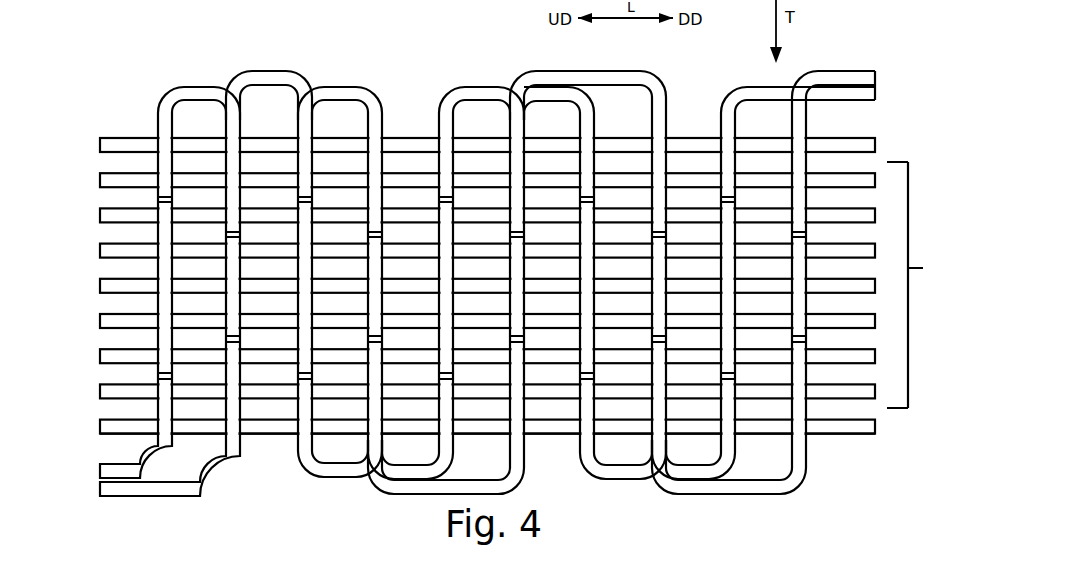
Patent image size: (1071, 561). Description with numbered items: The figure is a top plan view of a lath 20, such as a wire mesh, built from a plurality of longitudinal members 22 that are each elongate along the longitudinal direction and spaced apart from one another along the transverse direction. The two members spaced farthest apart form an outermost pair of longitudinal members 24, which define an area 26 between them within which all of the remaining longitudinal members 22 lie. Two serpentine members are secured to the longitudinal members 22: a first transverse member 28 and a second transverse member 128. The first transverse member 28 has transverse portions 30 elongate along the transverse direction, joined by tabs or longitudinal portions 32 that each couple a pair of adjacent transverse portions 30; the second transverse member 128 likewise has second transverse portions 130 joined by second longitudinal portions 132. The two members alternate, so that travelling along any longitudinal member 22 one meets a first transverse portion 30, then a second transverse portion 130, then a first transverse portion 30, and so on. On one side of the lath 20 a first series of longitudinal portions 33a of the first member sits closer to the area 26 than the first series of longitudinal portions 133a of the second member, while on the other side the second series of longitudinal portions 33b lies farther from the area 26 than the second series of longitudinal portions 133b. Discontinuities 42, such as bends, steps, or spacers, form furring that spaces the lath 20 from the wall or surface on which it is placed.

The lath 20 is at (393, 83).
The longitudinal members 22 is at (100, 145).
The outermost pair of longitudinal members 24 is at (863, 138).
The area 26 is at (918, 285).
The first transverse member 28 is at (100, 463).
The second transverse member 128 is at (100, 488).
The transverse portions 30 is at (165, 337).
The second plurality of transverse portions 130 is at (238, 375).
The longitudinal portions 32 is at (207, 95).
The second plurality of longitudinal portions 132 is at (285, 78).
The first series of longitudinal portions 33a is at (483, 95).
The first series of longitudinal portions of the second transverse member 133a is at (563, 78).
The second series of longitudinal portions 33b is at (628, 468).
The second series of longitudinal portions of the second transverse member 133b is at (728, 488).
The discontinuity 42 is at (727, 195).